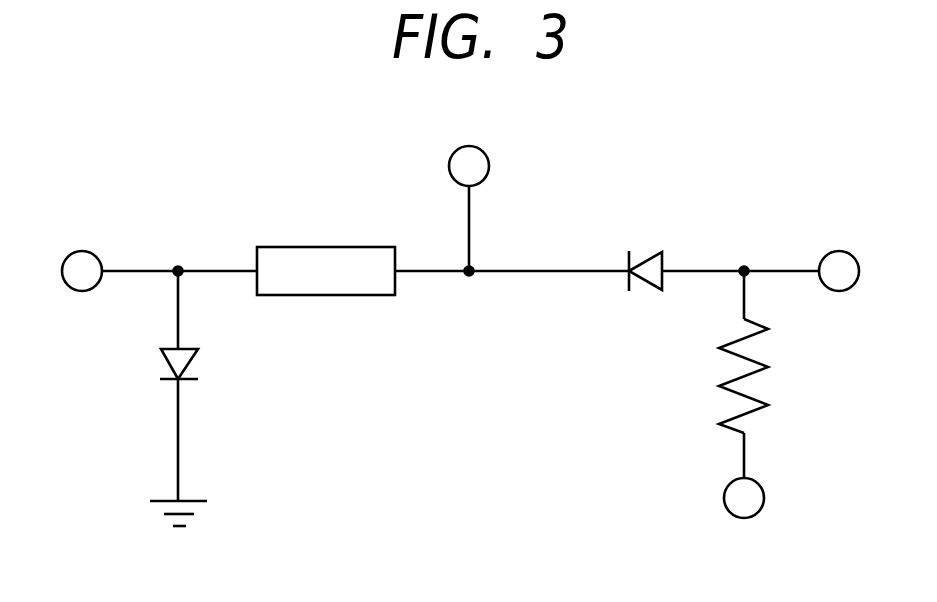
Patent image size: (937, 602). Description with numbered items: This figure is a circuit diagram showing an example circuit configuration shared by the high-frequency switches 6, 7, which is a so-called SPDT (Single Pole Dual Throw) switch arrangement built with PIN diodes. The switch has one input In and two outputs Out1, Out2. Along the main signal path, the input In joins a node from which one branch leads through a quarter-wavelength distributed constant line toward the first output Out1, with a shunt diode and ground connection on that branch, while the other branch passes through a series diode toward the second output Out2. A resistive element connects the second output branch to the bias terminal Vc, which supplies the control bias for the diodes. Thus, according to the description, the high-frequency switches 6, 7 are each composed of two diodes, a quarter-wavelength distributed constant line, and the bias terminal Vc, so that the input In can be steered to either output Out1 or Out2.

The high-frequency switch 6 is at (167, 152).
The high-frequency switch 7 is at (201, 152).
The input In is at (488, 160).
The first output Out1 is at (75, 253).
The second output Out2 is at (842, 253).
The bias terminal Vc is at (764, 496).